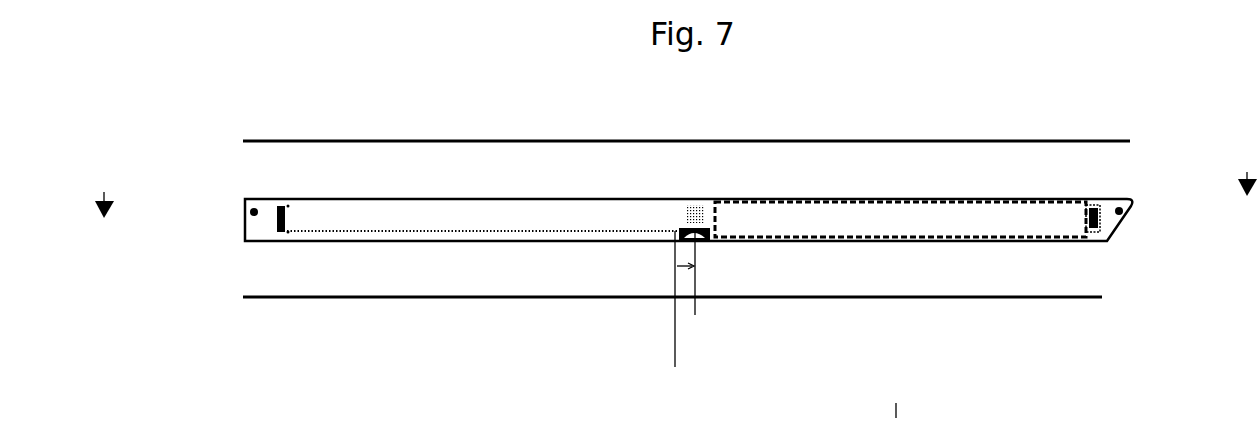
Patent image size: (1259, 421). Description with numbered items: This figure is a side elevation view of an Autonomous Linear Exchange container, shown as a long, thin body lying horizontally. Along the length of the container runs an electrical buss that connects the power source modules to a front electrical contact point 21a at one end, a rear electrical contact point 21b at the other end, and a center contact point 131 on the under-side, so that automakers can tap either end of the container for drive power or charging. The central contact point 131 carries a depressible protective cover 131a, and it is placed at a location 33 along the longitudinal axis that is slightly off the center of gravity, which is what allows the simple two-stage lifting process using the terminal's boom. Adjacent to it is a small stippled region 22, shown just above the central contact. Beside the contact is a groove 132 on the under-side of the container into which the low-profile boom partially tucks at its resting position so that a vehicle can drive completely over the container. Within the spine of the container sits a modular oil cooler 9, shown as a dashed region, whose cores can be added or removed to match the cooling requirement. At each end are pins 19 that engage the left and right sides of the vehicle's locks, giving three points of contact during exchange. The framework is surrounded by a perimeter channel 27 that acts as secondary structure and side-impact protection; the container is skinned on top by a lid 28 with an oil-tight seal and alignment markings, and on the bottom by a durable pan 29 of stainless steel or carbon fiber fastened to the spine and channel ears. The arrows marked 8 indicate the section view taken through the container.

The section line 8- 8 is at (109, 190).
The oil cooler 9 is at (900, 219).
The pins 19 is at (246, 238).
The front electrical contact point 21a is at (1100, 212).
The rear electrical contact point 21b is at (277, 210).
The stippled region 22 is at (688, 206).
The perimeter channel 27 is at (897, 396).
The lid 28 is at (831, 140).
The pan 29 is at (848, 301).
The location 33 is at (674, 314).
The contact point 131 is at (702, 286).
The depressible protective cover 131a is at (712, 240).
The groove 132 is at (472, 231).